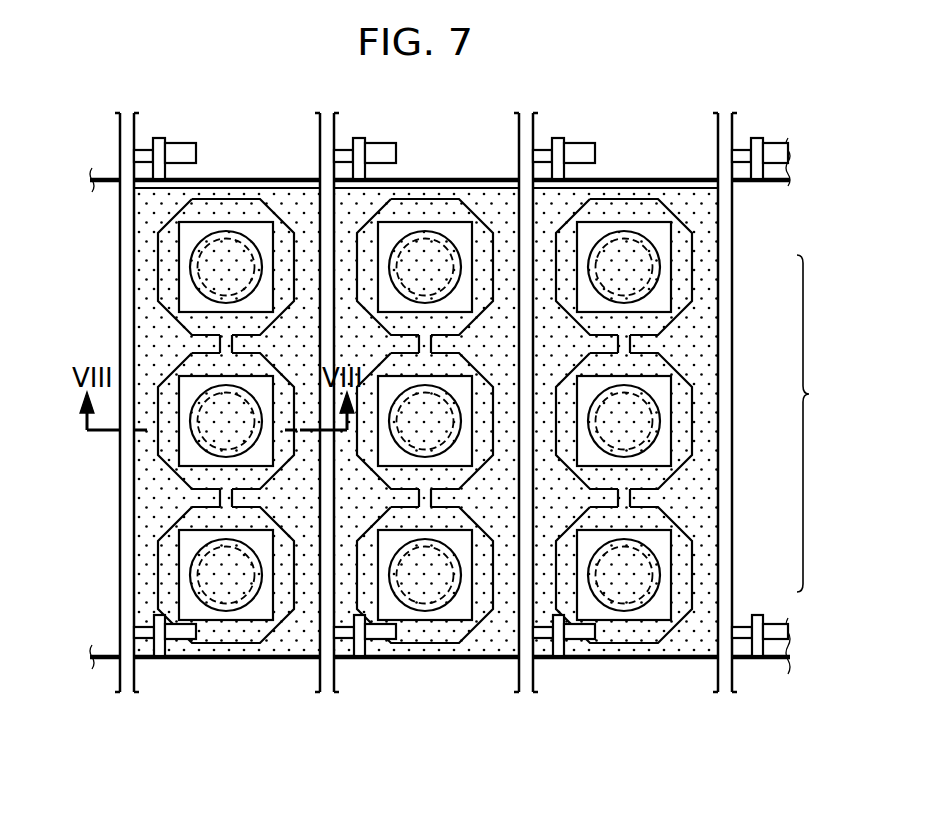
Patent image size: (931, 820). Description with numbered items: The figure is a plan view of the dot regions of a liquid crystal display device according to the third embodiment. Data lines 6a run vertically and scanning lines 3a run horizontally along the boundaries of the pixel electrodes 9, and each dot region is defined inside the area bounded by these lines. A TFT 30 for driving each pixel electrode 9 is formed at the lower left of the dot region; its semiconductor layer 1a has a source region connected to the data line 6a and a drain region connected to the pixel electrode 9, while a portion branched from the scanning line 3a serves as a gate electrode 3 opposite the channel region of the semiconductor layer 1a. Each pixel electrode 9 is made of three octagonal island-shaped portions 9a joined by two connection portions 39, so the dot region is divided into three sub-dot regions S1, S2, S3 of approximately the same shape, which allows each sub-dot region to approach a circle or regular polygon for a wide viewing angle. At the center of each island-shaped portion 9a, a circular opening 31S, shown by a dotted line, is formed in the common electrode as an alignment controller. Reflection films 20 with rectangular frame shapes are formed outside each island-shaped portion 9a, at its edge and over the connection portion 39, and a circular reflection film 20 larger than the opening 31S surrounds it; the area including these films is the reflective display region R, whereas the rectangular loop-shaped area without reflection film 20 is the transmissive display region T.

The semiconductor layer 1a is at (344, 663).
The gate electrode 3 is at (358, 634).
The scanning line 3a is at (652, 662).
The data line 6a is at (319, 165).
The pixel electrode 9 is at (813, 423).
The island-shaped portion 9a is at (692, 262).
The reflection film 20 is at (243, 233).
The TFT 30 is at (386, 657).
The circular opening 31S is at (218, 239).
The connection portion 39 is at (632, 345).
The reflective display region R is at (240, 280).
The first sub-dot region S1 is at (158, 263).
The second sub-dot region S2 is at (158, 453).
The third sub-dot region S3 is at (158, 578).
The transmissive display region T is at (402, 222).